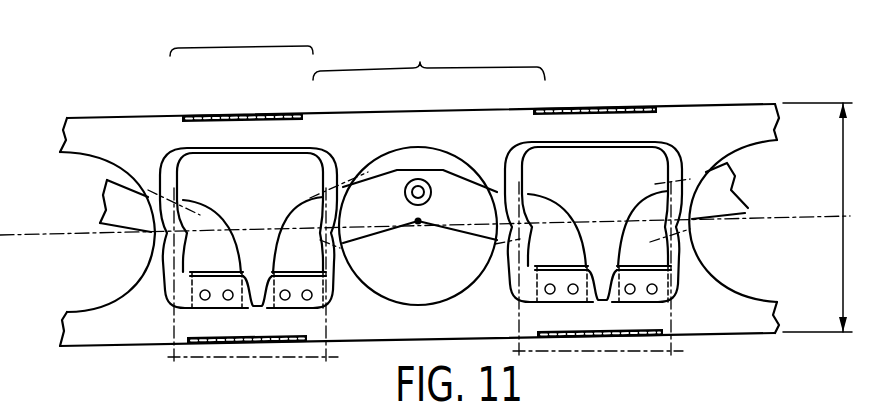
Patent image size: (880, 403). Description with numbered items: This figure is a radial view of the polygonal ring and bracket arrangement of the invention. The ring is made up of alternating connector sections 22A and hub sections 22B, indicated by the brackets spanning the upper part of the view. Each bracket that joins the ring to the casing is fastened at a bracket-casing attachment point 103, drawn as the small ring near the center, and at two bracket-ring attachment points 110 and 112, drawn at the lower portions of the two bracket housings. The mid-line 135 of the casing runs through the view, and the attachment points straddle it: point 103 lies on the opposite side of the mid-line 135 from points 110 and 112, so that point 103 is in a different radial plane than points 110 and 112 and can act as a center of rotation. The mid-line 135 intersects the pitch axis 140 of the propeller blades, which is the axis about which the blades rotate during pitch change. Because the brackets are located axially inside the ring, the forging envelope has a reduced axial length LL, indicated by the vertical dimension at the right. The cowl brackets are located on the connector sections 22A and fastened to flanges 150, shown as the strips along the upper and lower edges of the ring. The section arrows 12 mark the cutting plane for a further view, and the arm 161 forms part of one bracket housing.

The connector section 22A is at (248, 48).
The hub section 22B is at (420, 62).
The flange 150 is at (213, 113).
The attachment point 103 is at (417, 179).
The pitch axis 140 is at (422, 217).
The left arm of housing 161 is at (534, 233).
The mid-line 135 is at (627, 205).
The attachment point 110 is at (300, 310).
The attachment point 112 is at (572, 249).
The section line 12- 12 is at (41, 243).
The axial length LL is at (845, 277).